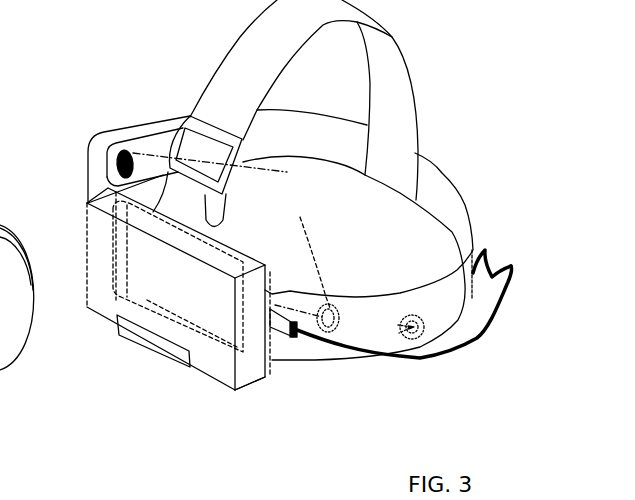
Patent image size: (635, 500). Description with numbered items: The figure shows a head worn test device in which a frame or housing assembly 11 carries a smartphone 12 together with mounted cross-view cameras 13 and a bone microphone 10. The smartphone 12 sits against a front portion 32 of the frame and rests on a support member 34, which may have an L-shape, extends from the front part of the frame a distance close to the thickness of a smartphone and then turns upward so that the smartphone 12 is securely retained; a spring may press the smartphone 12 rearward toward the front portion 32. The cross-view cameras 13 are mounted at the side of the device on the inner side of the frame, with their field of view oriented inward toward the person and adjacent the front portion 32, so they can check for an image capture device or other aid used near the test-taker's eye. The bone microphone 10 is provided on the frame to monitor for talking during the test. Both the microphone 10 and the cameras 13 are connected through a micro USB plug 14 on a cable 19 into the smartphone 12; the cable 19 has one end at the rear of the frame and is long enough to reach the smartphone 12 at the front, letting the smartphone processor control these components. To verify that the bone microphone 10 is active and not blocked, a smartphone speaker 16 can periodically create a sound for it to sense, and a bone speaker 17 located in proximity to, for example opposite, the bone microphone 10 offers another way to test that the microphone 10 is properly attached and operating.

The bone microphone 10 is at (398, 350).
The head worn frame assembly 11 is at (388, 218).
The smartphone 12 is at (147, 300).
The cross-view camera 13 is at (120, 150).
The micro USB plug 14 is at (283, 340).
The smartphone speaker 16 is at (233, 379).
The bone speaker 17 is at (452, 305).
The cable 19 is at (495, 317).
The front portion 32 is at (117, 184).
The support member 34 is at (138, 338).